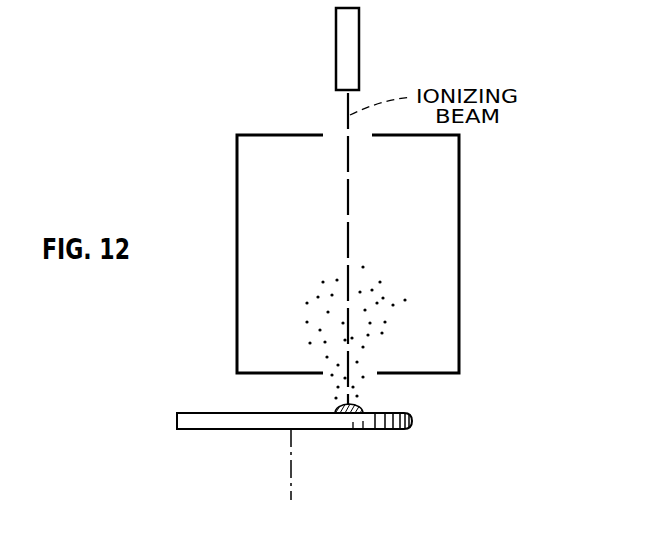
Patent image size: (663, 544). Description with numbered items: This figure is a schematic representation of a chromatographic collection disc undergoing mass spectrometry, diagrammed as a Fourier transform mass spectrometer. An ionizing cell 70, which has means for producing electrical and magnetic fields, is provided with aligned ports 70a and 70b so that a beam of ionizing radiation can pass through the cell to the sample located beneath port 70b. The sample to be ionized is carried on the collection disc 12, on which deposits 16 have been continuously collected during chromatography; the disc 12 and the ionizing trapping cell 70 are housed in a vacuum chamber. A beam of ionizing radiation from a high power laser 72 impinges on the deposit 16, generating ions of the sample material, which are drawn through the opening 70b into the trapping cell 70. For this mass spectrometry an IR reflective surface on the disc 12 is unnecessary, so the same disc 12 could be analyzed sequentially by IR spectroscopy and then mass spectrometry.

The high power laser 72 is at (360, 45).
The ionizing cell 70 is at (459, 269).
The port 70a is at (358, 142).
The port 70b is at (362, 368).
The collection disc 12 is at (170, 421).
The deposit 16 is at (363, 405).